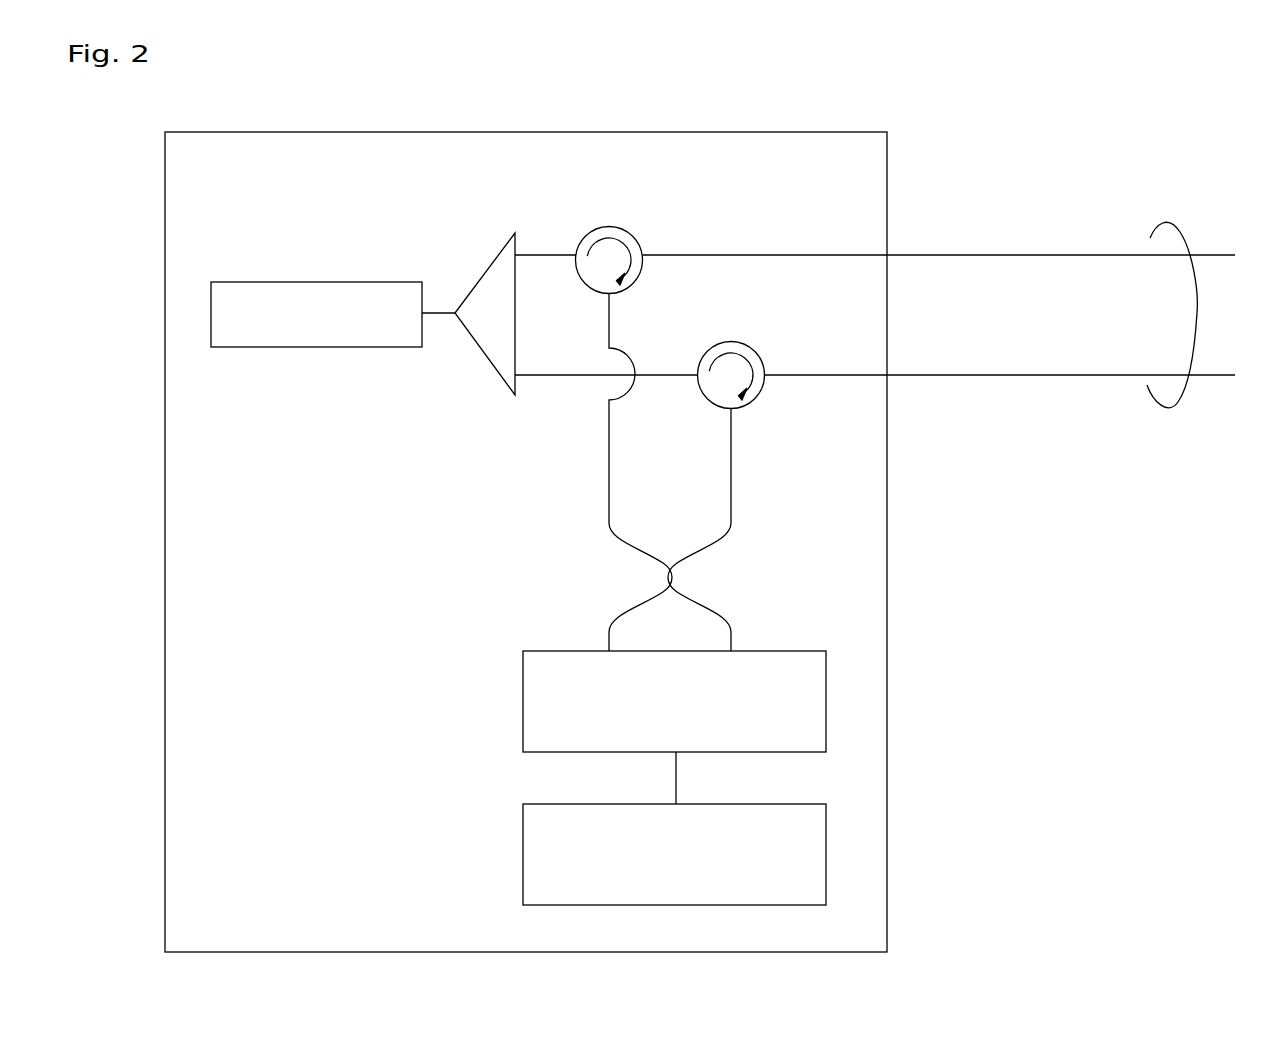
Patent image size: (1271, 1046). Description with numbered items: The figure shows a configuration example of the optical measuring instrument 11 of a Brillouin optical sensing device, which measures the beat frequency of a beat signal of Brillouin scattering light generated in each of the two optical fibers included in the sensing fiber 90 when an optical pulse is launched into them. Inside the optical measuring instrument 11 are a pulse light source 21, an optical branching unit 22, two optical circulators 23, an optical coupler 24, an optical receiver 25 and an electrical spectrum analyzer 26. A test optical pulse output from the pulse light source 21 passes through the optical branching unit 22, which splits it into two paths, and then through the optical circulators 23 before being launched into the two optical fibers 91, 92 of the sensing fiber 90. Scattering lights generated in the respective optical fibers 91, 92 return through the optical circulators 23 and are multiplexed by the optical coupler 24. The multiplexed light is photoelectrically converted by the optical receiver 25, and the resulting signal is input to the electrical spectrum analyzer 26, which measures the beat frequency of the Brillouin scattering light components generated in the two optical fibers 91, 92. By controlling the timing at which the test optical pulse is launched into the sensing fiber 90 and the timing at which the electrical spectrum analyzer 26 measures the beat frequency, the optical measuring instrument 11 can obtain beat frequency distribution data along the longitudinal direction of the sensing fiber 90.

The optical measuring instrument 11 is at (377, 130).
The pulse light source 21 is at (280, 282).
The optical branching unit 22 is at (492, 368).
The optical circulators 23 is at (633, 230).
The optical coupler 24 is at (680, 575).
The optical receiver 25 is at (790, 650).
The electrical spectrum analyzer 26 is at (790, 803).
The sensing fiber 90 is at (1173, 407).
The optical fiber 91 is at (988, 255).
The optical fiber 92 is at (988, 375).